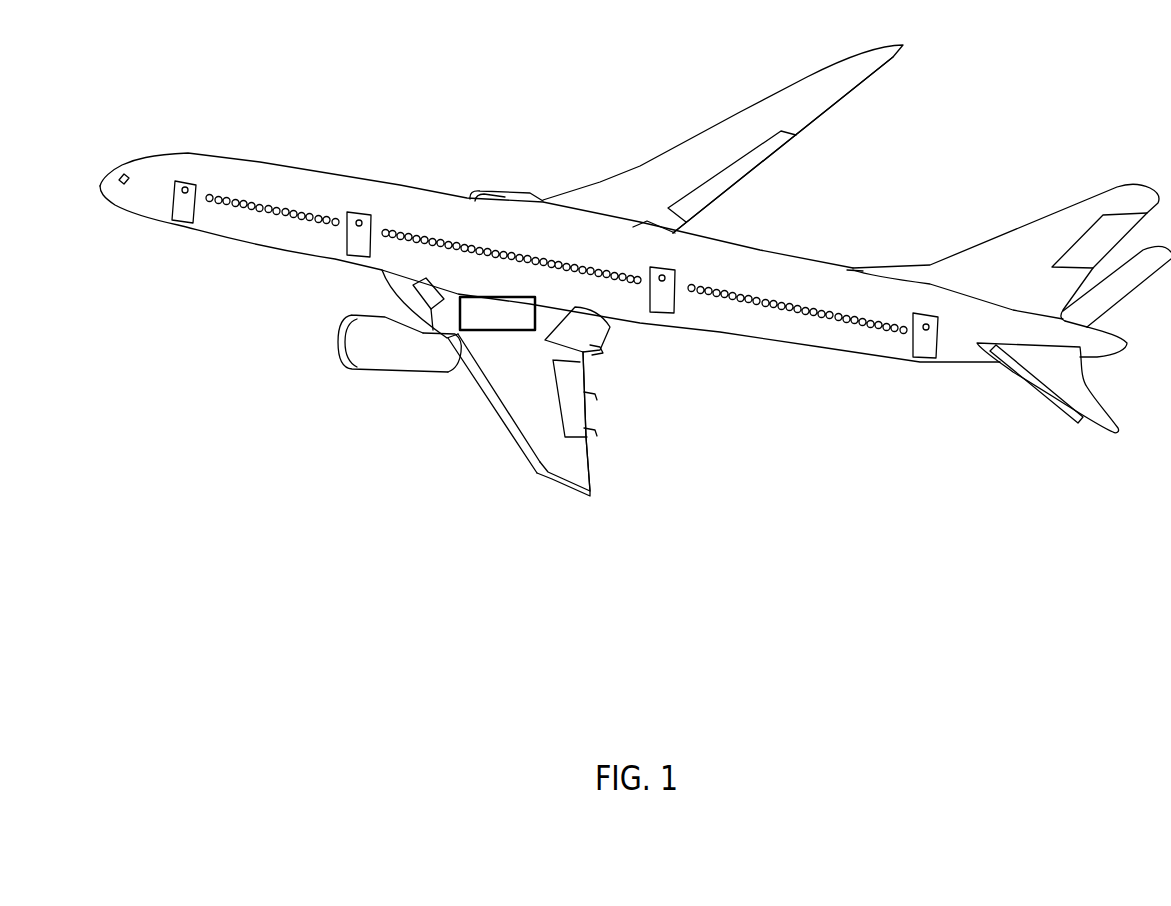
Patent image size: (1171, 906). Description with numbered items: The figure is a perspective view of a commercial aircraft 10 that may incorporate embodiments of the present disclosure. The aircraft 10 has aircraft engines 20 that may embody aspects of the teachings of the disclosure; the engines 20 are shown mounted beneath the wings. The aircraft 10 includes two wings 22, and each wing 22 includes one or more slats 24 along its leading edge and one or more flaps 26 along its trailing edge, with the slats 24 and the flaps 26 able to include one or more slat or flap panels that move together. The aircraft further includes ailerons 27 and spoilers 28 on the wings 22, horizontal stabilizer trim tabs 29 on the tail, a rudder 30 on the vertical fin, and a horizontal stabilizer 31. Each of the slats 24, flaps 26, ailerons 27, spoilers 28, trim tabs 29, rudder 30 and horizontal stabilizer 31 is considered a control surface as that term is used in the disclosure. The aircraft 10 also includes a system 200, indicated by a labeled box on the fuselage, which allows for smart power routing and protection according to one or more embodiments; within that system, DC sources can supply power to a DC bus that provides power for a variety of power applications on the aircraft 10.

The commercial aircraft 10 is at (1027, 56).
The aircraft engines 20 is at (345, 351).
The wings 22 is at (728, 132).
The slats 24 is at (497, 423).
The flaps 26 is at (753, 167).
The ailerons 27 is at (844, 101).
The spoilers 28 is at (806, 96).
The horizontal stabilizer trim tabs 29 is at (1018, 379).
The rudder 30 is at (1098, 236).
The horizontal stabilizer 31 is at (1087, 388).
The system 200 is at (515, 326).